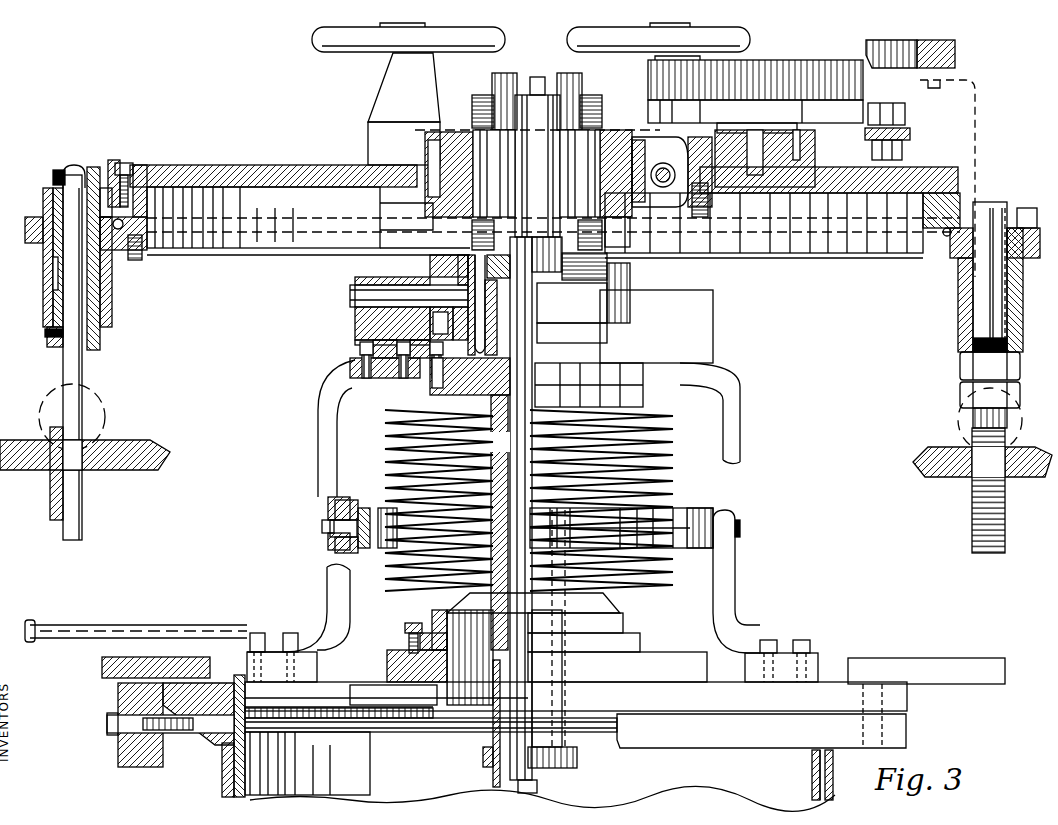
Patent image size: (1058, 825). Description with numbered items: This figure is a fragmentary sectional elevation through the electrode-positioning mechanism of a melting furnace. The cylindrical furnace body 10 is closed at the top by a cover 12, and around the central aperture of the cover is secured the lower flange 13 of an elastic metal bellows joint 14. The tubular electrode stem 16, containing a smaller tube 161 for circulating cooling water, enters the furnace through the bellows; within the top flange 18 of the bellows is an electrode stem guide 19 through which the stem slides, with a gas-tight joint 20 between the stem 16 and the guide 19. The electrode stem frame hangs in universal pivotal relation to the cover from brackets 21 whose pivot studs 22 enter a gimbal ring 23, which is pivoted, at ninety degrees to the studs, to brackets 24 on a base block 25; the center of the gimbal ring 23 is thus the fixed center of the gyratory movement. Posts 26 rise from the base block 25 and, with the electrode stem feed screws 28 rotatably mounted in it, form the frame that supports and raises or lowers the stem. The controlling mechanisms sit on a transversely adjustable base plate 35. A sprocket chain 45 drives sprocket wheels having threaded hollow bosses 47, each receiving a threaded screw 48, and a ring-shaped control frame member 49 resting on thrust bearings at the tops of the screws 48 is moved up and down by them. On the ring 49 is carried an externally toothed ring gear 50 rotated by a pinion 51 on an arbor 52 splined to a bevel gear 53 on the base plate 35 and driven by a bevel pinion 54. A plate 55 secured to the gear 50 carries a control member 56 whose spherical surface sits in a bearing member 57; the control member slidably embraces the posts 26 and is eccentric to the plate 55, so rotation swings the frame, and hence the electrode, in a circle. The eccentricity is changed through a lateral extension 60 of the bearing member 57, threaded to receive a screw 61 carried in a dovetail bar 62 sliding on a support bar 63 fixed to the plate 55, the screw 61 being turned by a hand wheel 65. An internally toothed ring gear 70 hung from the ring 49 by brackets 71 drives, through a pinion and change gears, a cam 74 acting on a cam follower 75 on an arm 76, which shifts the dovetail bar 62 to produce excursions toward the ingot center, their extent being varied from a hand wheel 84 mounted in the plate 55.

The furnace body 10 is at (833, 780).
The cover 12 is at (345, 690).
The lower flange 13 is at (622, 626).
The elastic metal bellows joint 14 is at (678, 485).
The electrode stem 16 is at (525, 165).
The smaller tubular member 161 is at (536, 80).
The top flange 18 is at (645, 398).
The electrode stem guide 19 is at (499, 522).
The gas-tight joint 20 is at (510, 380).
The brackets 21 is at (327, 590).
The pivot studs 22 is at (325, 535).
The gimbal ring 23 is at (695, 550).
The brackets 24 is at (318, 420).
The base block 25 is at (713, 351).
The posts 26 is at (492, 85).
The electrode stem feed screws 28 is at (478, 115).
The base plate 35 is at (105, 668).
The sprocket chain 45 is at (140, 625).
The threaded hollow boss 47 is at (918, 455).
The threaded screw 48 is at (972, 522).
The ring-shaped control frame member 49 is at (1037, 258).
The externally toothed ring-shaped gear 50 is at (137, 187).
The pinion 51 is at (47, 205).
The arbor 52 is at (85, 413).
The bevel gear 53 is at (10, 470).
The bevel pinion 54 is at (45, 405).
The plate 55 is at (236, 165).
The control member 56 is at (605, 217).
The bearing member 57 is at (443, 207).
The lateral extension 60 is at (662, 197).
The screw 61 is at (678, 197).
The bar 62 is at (722, 210).
The support bar 63 is at (815, 160).
The hand wheel 65 is at (752, 42).
The internally toothed ring gear 70 is at (898, 70).
The brackets 71 is at (978, 148).
The cam 74 is at (755, 94).
The cam follower 75 is at (905, 116).
The arm 76 is at (910, 134).
The hand wheel 84 is at (312, 40).